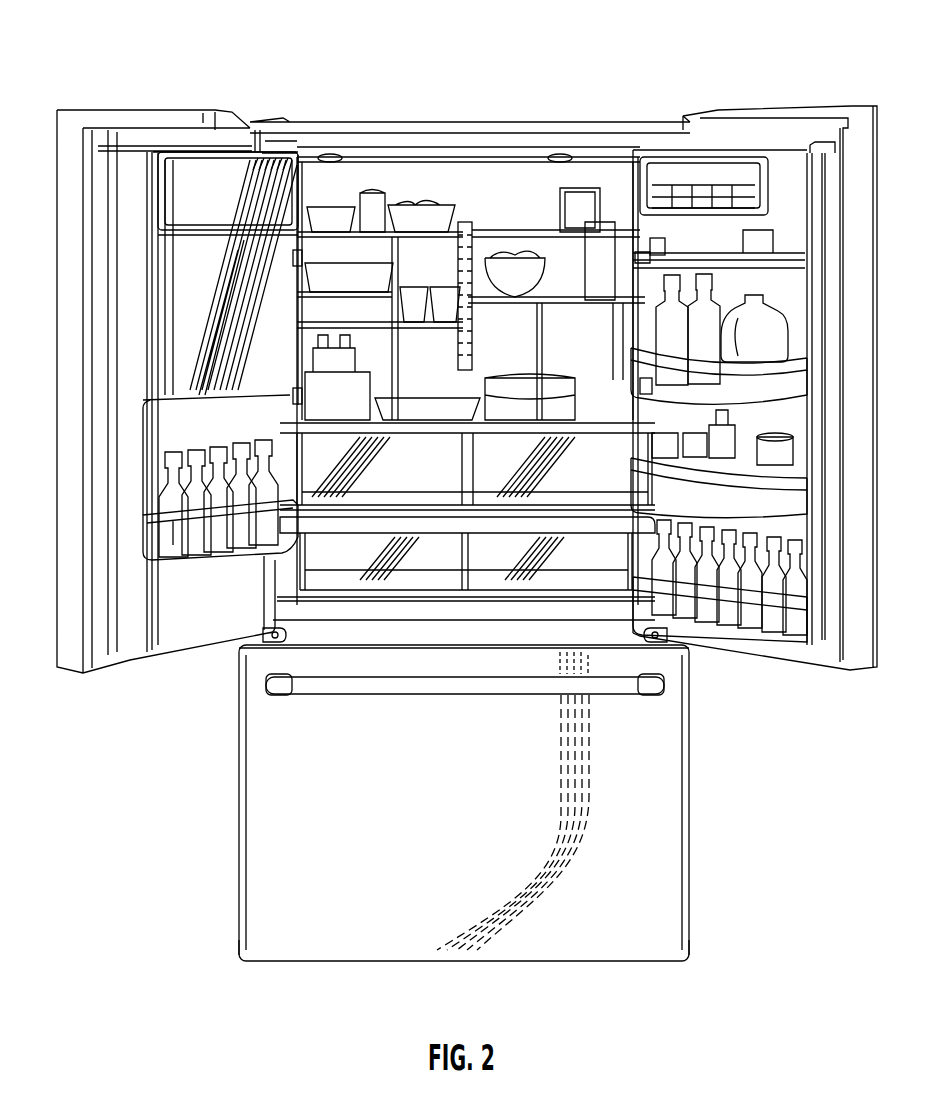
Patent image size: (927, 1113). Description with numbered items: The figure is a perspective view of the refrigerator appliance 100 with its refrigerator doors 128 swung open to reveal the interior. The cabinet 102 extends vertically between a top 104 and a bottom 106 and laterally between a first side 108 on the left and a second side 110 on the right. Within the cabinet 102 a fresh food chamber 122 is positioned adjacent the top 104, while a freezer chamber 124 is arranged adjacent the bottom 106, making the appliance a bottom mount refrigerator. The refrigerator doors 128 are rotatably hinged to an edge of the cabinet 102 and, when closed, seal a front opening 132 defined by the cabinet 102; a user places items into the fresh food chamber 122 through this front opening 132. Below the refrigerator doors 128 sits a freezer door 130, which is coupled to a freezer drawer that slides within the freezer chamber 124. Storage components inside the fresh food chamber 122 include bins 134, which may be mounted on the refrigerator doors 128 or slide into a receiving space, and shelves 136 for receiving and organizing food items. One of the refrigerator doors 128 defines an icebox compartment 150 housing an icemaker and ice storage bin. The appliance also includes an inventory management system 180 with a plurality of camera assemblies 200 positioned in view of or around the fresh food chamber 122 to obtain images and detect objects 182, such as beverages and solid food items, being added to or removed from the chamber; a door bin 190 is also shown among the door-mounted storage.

The refrigerator appliance 100 is at (827, 40).
The cabinet 102 is at (623, 127).
The top 104 is at (411, 117).
The bottom 106 is at (334, 966).
The first side 108 is at (238, 966).
The second side 110 is at (690, 966).
The fresh food chamber 122 is at (559, 187).
The freezer chamber 124 is at (330, 785).
The refrigerator doors 128 is at (863, 480).
The freezer door 130 is at (454, 830).
The front opening 132 is at (539, 174).
The bins 134 is at (490, 478).
The shelves 136 is at (332, 236).
The icebox compartment 150 is at (207, 210).
The inventory management system 180 is at (616, 190).
The objects 182 is at (368, 200).
The door bin 190 is at (666, 233).
The camera assemblies 200 is at (655, 240).